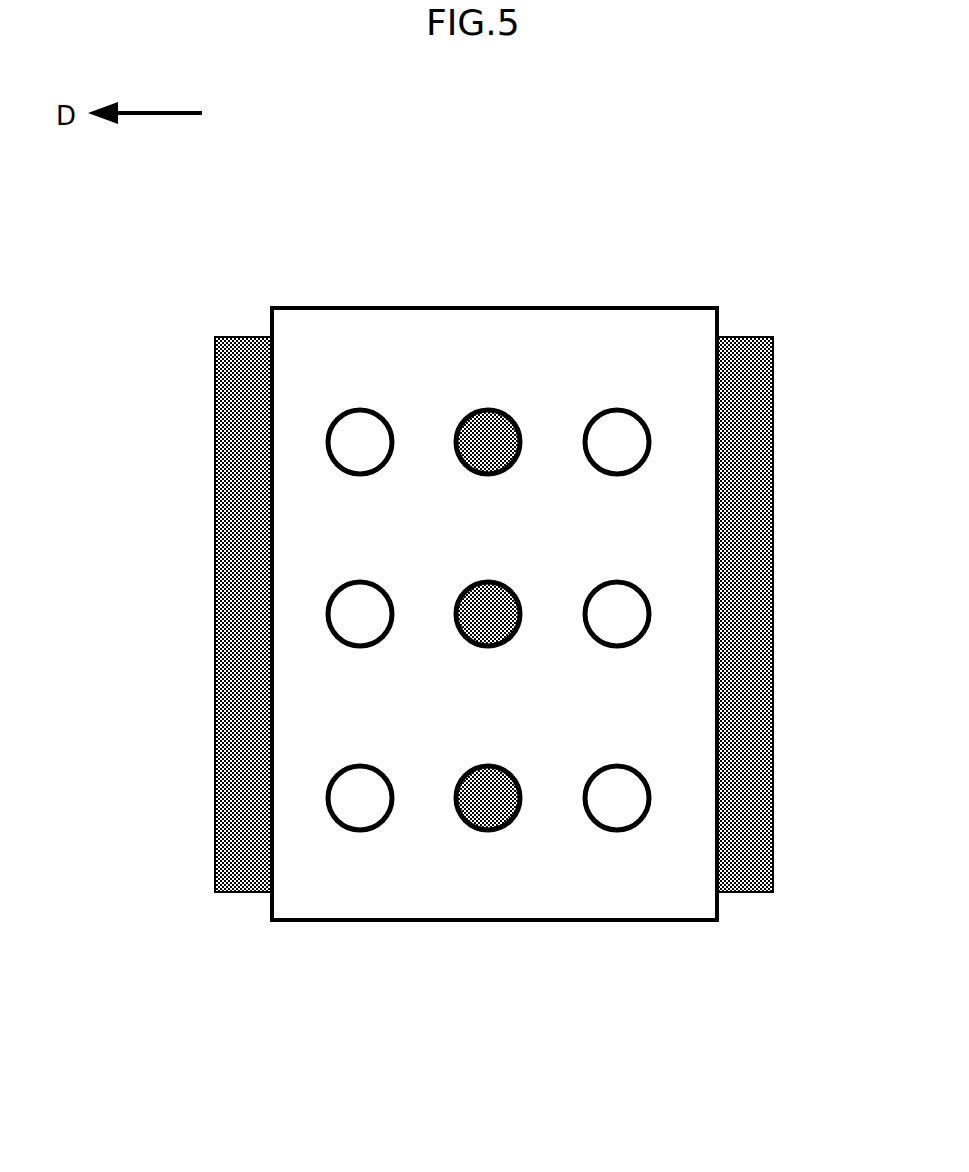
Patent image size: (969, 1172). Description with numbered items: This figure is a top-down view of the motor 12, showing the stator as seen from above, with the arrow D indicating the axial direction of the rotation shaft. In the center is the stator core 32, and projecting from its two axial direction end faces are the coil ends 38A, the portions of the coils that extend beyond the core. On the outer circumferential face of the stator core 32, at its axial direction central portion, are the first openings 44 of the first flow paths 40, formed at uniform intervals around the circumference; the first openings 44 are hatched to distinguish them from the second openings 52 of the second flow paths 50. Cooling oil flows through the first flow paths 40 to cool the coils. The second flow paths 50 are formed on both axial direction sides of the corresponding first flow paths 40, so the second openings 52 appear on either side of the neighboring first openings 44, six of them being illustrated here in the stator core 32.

The motor 12 is at (195, 505).
The stator core 32 is at (693, 500).
The coil ends 38A is at (237, 368).
The first flow paths 40 is at (374, 623).
The first openings 44 is at (493, 408).
The second flow paths 50 is at (489, 623).
The second openings 52 is at (368, 408).